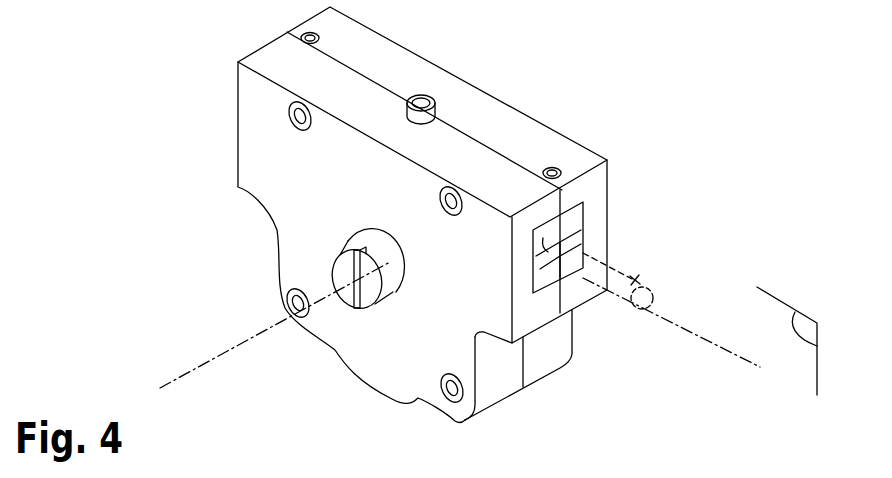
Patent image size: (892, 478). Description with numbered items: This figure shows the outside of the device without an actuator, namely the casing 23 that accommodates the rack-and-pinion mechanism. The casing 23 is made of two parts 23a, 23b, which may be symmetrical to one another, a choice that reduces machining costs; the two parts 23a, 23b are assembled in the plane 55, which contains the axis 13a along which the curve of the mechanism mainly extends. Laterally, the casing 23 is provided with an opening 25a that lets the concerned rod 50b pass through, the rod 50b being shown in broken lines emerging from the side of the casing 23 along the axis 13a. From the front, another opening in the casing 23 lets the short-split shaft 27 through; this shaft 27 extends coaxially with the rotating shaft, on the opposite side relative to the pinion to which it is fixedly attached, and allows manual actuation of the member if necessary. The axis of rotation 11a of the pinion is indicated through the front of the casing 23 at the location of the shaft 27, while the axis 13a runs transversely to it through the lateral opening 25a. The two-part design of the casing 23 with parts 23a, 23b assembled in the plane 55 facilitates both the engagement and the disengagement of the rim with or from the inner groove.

The casing 23 is at (415, 237).
The casing part 23a is at (568, 162).
The casing part 23b is at (258, 157).
The lateral opening 25a is at (548, 251).
The short-split shaft 27 is at (394, 284).
The axis of rotation of the pinion 11a is at (207, 367).
The axis 13a is at (735, 352).
The rod 50b is at (640, 275).
The plane 55 is at (779, 341).